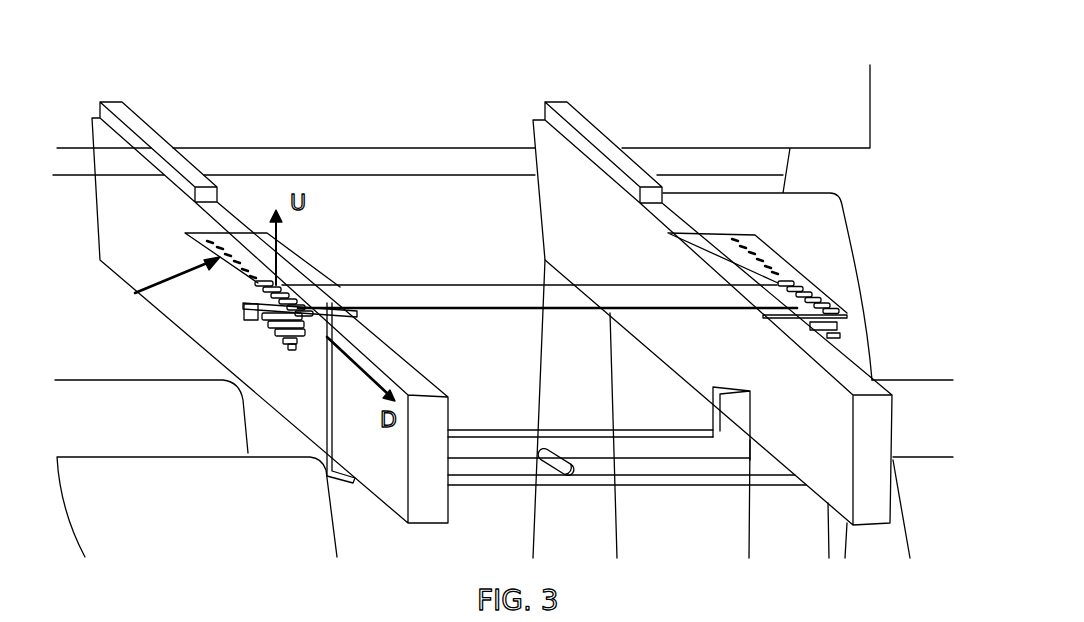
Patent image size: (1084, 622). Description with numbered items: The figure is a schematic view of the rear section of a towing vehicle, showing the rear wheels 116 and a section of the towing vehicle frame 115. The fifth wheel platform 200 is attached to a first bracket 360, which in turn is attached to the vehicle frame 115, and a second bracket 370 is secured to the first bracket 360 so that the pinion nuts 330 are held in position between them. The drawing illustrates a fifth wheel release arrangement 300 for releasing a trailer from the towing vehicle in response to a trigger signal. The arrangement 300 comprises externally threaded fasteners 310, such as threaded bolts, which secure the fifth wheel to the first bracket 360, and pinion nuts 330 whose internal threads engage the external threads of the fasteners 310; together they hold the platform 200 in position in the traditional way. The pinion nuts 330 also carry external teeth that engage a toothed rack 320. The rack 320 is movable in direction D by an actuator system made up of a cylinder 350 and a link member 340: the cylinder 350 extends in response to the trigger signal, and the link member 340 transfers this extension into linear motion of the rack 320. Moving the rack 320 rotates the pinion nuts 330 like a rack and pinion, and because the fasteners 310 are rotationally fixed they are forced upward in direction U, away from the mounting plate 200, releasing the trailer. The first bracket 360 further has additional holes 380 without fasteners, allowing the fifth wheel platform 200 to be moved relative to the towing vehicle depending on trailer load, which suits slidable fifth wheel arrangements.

The fifth wheel release arrangement 300 is at (97, 69).
The towing vehicle frame 115 is at (152, 205).
The rear wheels 116 is at (227, 507).
The fifth wheel platform 200 is at (518, 297).
The externally threaded fasteners 310 is at (298, 300).
The toothed rack 320 is at (318, 328).
The pinion nuts 330 is at (280, 318).
The link member 340 is at (325, 395).
The cylinder 350 is at (553, 457).
The first bracket 360 is at (195, 243).
The second bracket 370 is at (255, 309).
The additional holes 380 is at (151, 282).